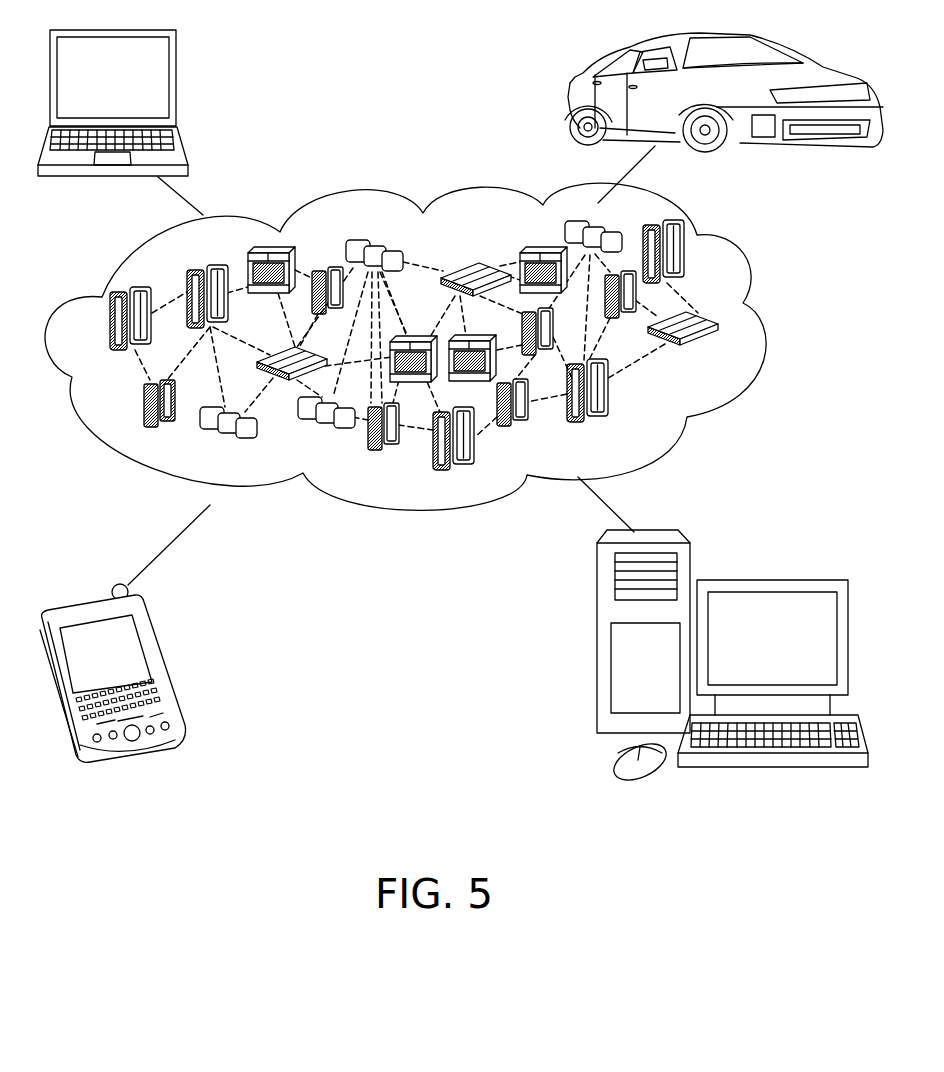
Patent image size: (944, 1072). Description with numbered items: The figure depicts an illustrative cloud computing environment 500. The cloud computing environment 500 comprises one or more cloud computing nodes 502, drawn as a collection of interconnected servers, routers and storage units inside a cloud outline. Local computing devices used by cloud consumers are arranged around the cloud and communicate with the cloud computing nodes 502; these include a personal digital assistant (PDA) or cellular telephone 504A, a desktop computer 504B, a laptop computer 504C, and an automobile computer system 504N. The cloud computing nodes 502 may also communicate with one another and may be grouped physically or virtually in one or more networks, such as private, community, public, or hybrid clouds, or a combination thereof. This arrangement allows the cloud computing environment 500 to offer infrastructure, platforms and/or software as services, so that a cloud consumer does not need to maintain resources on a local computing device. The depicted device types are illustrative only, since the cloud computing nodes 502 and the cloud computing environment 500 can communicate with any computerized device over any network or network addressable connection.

The cloud computing environment 500 is at (725, 322).
The cloud computing nodes 502 is at (722, 352).
The personal digital assistant (PDA) or cellular telephone 504A is at (156, 633).
The desktop computer 504B is at (758, 580).
The laptop computer 504C is at (175, 63).
The automobile computer system 504N is at (575, 113).